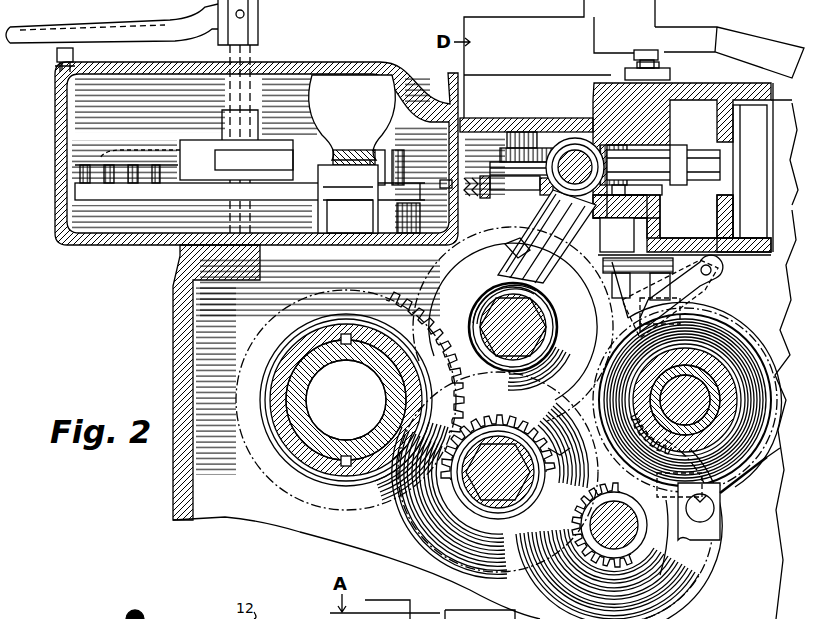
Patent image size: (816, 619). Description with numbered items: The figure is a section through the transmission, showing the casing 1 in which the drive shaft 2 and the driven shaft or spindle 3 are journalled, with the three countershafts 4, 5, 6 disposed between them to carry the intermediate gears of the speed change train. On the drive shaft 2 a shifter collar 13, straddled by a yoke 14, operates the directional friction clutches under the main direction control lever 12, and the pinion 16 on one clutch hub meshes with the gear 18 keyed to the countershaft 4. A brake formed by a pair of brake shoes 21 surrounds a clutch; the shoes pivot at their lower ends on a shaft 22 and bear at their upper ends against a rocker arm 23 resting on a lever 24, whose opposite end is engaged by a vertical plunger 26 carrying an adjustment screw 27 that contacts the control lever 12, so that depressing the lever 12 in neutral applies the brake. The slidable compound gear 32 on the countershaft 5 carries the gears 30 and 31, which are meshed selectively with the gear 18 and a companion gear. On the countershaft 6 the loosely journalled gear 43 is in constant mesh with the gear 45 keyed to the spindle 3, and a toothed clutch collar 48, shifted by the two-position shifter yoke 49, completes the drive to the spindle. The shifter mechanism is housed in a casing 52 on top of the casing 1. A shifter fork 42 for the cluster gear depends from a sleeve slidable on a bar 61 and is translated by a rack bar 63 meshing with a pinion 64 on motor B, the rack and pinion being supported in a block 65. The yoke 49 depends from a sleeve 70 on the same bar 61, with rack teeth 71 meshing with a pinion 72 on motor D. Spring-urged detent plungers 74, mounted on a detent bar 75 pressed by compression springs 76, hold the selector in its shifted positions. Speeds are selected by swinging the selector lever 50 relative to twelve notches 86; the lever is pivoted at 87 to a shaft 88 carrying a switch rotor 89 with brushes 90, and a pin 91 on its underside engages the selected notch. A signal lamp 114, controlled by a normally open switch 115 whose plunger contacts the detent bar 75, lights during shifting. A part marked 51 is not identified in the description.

The casing 1 is at (180, 366).
The drive shaft 2 is at (736, 462).
The driven shaft or spindle 3 is at (330, 364).
The countershaft 4 is at (645, 542).
The countershaft 5 is at (535, 488).
The countershaft 6 is at (513, 324).
The main direction control lever 12 is at (752, 52).
The shifter collar 13 is at (735, 358).
The yoke 14 is at (768, 352).
The pinion 16 is at (722, 470).
The gear 18 is at (708, 580).
The brake shoes 21 is at (770, 322).
The shaft 22 is at (718, 524).
The rocker arm 23 is at (734, 288).
The lever 24 is at (679, 293).
The vertical plunger 26 is at (672, 74).
The adjustment screw 27 is at (642, 52).
The gear 30 is at (542, 590).
The gear 31 is at (520, 498).
The slidable compound gear 32 is at (562, 455).
The shifter fork 42 is at (590, 224).
The gear 43 is at (428, 300).
The gear 45 is at (346, 393).
The toothed clutch collar 48 is at (478, 300).
The two-position shifter yoke 49 is at (512, 248).
The selector lever 50 is at (118, 34).
The shaft 51 is at (205, 199).
The casing 52 is at (98, 250).
The bar 61 is at (574, 118).
The rack bar 63 is at (678, 216).
The pinion 64 is at (678, 200).
The block 65 is at (676, 134).
The sleeve 70 is at (548, 118).
The rack teeth 71 is at (521, 145).
The pinion 72 is at (512, 132).
The detent plungers 74 is at (515, 197).
The detent bar 75 is at (484, 176).
The compression springs 76 is at (448, 166).
The notches 86 is at (58, 68).
The pivot 87 is at (255, 18).
The shaft 88 is at (256, 58).
The switch rotor 89 is at (265, 138).
The brushes 90 is at (148, 168).
The pin 91 is at (57, 76).
The signal lamp 114 is at (352, 154).
The switch 115 is at (390, 222).